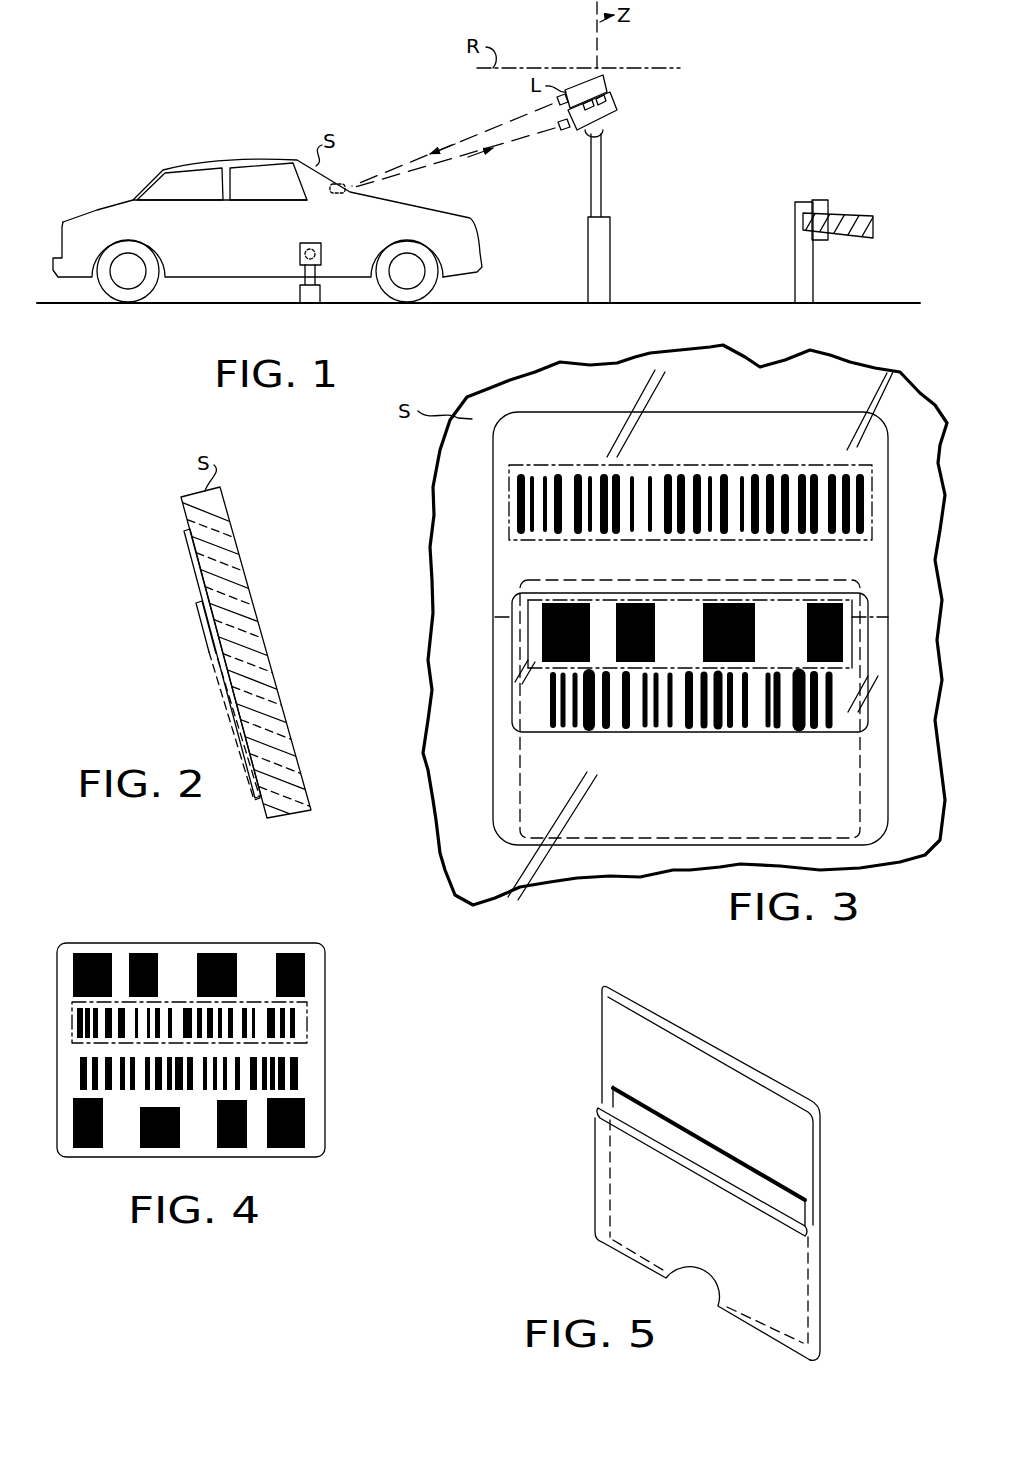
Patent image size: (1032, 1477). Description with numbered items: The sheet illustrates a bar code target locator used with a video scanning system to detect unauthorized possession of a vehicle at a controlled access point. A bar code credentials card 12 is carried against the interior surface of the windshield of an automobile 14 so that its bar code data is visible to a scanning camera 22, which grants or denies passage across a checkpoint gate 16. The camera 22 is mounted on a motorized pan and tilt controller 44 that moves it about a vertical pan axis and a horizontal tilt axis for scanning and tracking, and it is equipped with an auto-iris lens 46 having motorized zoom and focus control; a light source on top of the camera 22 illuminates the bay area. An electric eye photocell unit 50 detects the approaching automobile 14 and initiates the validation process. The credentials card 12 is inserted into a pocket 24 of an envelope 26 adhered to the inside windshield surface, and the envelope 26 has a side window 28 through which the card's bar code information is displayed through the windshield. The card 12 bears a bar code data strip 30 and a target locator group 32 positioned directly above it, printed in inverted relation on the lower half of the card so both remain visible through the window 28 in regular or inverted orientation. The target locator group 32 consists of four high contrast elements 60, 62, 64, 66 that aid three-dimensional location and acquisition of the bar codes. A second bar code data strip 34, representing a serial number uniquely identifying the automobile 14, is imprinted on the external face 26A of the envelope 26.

In FIG. 1, the bar code credentials card 12 is at (341, 181).
In FIG. 2, the bar code credentials card 12 is at (196, 634).
In FIG. 3, the bar code credentials card 12 is at (527, 577).
In FIG. 4, the bar code credentials card 12 is at (325, 967).
In FIG. 5, the bar code credentials card 12 is at (638, 1113).
In FIG. 1, the automobile 14 is at (218, 155).
In FIG. 1, the checkpoint gate 16 is at (801, 193).
In FIG. 1, the scanning camera 22 is at (612, 112).
In FIG. 5, the pocket 24 is at (812, 1228).
In FIG. 2, the envelope 26 is at (189, 565).
In FIG. 3, the envelope 26 is at (486, 502).
In FIG. 5, the envelope 26 is at (826, 1139).
In FIG. 3, the external face of the envelope 26A is at (781, 393).
In FIG. 5, the external face of the envelope 26A is at (697, 1024).
In FIG. 3, the side window 28 is at (513, 715).
In FIG. 3, the bar code data strip 30 is at (679, 740).
In FIG. 4, the bar code data strip 30 is at (307, 1030).
In FIG. 3, the target locator group 32 is at (525, 650).
In FIG. 4, the target locator group 32 is at (86, 926).
In FIG. 3, the second bar code data strip 34 is at (549, 460).
In FIG. 1, the pan and tilt controller 44 is at (612, 126).
In FIG. 1, the auto-iris lens 46 is at (568, 132).
In FIG. 1, the electric eye photocell unit 50 is at (322, 256).
In FIG. 3, the high contrast element 60 is at (590, 612).
In FIG. 4, the high contrast element 60 is at (108, 960).
In FIG. 3, the high contrast element 62 is at (656, 612).
In FIG. 4, the high contrast element 62 is at (160, 960).
In FIG. 3, the high contrast element 64 is at (756, 612).
In FIG. 4, the high contrast element 64 is at (236, 960).
In FIG. 3, the high contrast element 66 is at (845, 612).
In FIG. 4, the high contrast element 66 is at (305, 960).